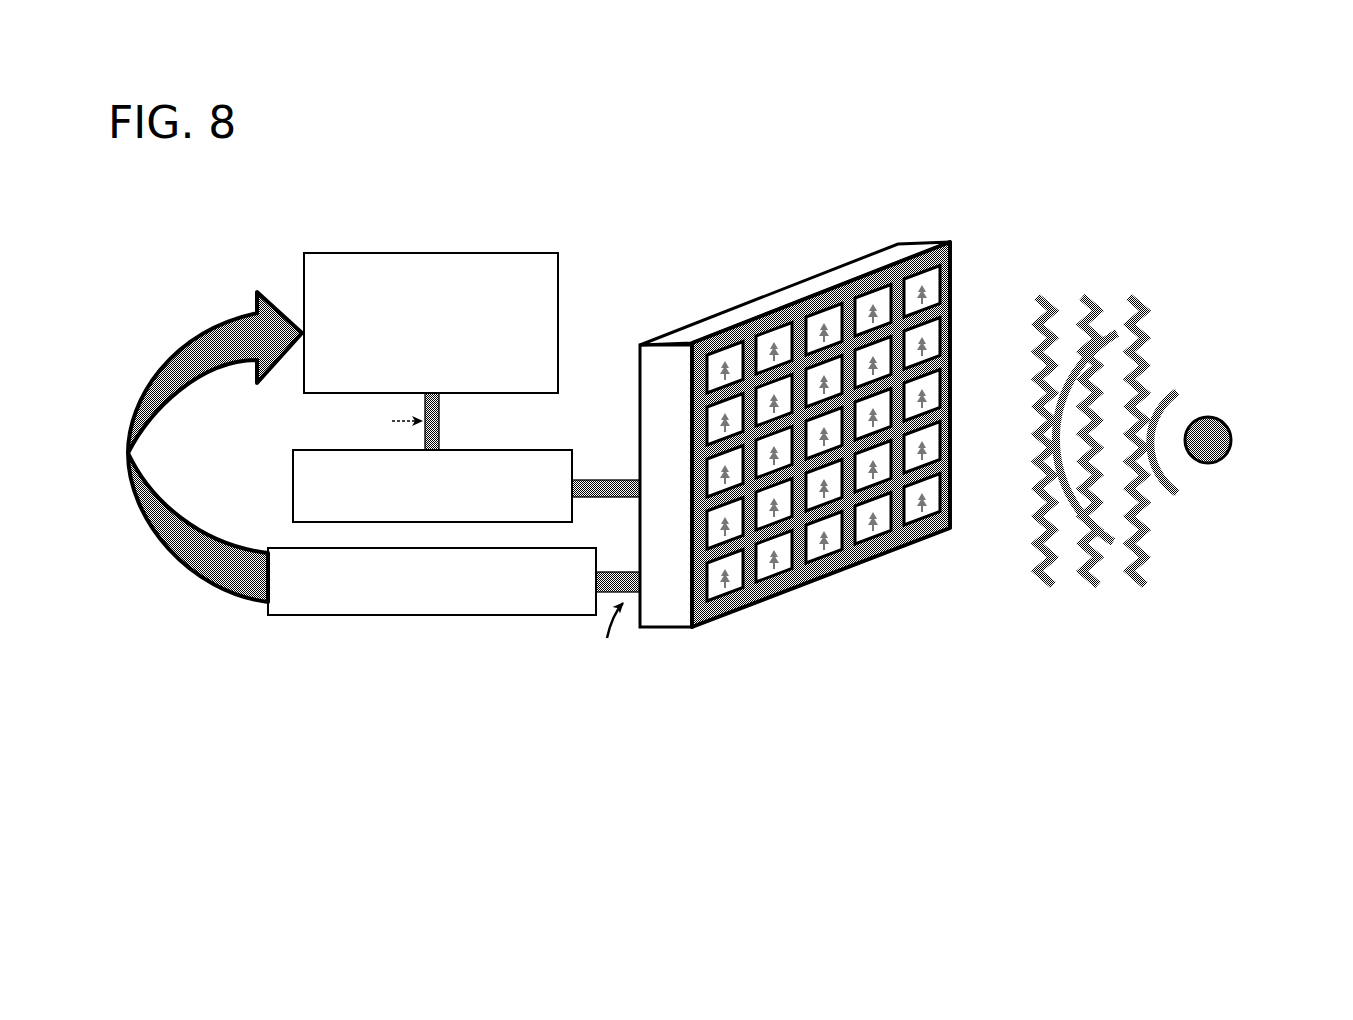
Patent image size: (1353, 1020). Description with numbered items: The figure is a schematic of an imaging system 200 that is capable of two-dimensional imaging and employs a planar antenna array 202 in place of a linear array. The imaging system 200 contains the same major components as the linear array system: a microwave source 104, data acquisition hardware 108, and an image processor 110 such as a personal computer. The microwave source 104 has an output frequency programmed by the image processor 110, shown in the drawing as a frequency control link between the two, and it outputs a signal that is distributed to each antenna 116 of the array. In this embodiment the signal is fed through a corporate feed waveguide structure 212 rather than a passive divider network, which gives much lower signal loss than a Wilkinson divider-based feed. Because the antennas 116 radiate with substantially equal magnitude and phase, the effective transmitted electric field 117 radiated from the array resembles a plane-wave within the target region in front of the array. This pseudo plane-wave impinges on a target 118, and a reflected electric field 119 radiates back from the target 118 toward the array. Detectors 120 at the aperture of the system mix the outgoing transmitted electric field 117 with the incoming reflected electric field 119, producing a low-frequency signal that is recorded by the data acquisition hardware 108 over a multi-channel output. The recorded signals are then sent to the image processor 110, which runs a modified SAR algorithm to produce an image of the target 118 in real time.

The imaging system 200 is at (1072, 90).
The image processor 110 is at (405, 253).
The microwave source 104 is at (292, 498).
The data acquisition hardware 108 is at (308, 617).
The planar antenna array 202 is at (735, 321).
The antenna 116 is at (917, 250).
The detectors 120 is at (946, 287).
The corporate feed waveguide structure 212 is at (665, 637).
The transmitted electric field 117 is at (1156, 304).
The target 118 is at (1245, 427).
The reflected electric field 119 is at (1187, 510).